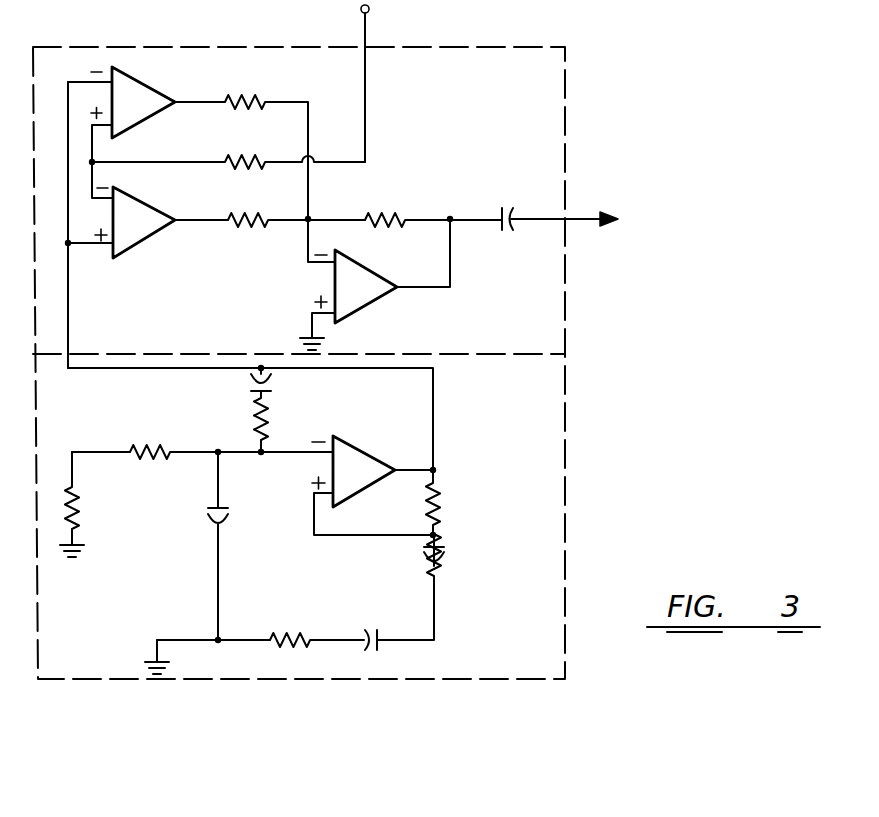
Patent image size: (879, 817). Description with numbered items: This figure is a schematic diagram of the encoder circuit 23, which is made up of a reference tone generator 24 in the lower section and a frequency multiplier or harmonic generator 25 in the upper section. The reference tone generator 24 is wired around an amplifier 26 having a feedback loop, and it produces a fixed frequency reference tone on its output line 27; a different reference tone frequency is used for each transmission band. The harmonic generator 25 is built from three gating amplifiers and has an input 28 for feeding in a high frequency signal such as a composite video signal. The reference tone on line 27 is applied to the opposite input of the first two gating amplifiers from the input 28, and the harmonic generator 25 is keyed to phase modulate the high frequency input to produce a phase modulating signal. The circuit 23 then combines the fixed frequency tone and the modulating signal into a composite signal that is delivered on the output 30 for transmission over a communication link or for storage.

The encoder circuit 23 is at (566, 170).
The reference tone generator 24 is at (347, 519).
The harmonic generator 25 is at (349, 185).
The amplifier 26 is at (373, 455).
The output line 27 is at (70, 308).
The input 28 is at (364, 26).
The output 30 is at (543, 218).